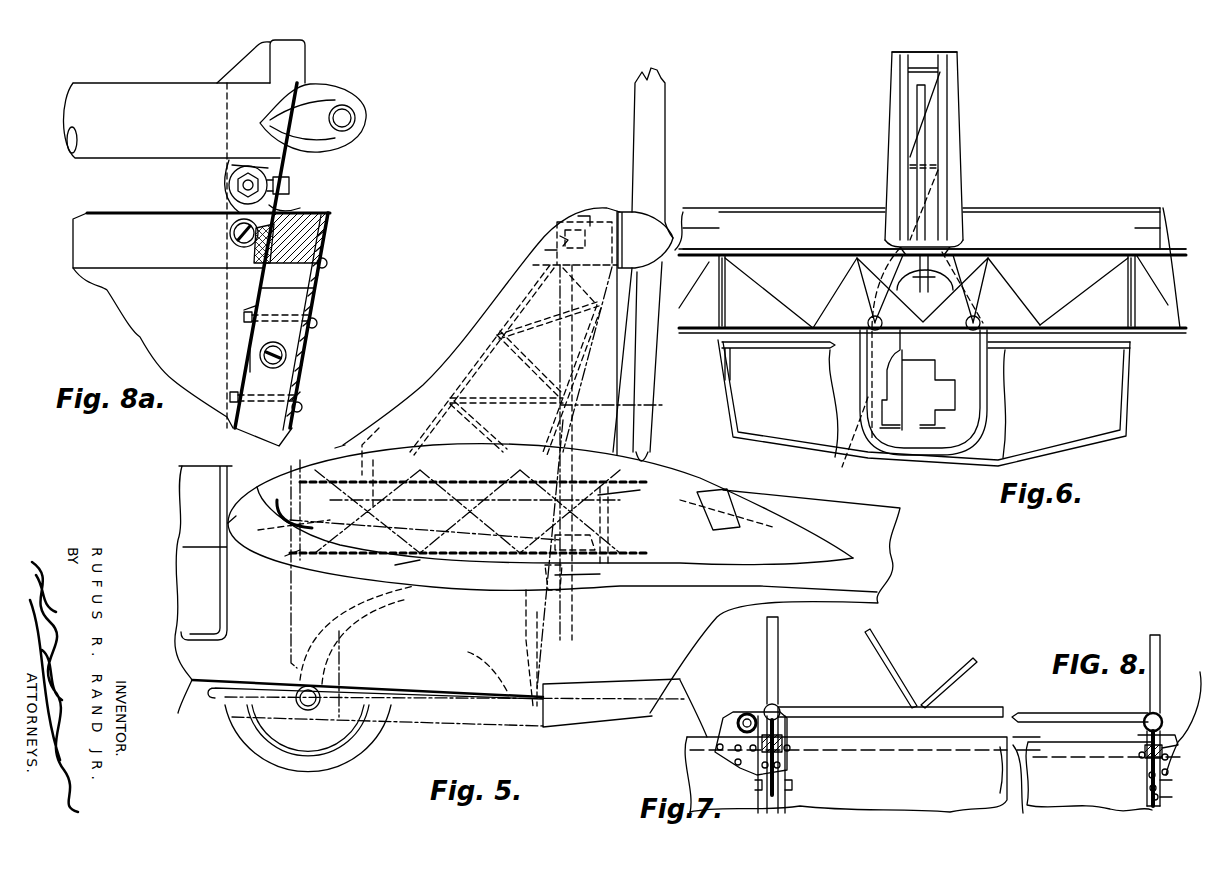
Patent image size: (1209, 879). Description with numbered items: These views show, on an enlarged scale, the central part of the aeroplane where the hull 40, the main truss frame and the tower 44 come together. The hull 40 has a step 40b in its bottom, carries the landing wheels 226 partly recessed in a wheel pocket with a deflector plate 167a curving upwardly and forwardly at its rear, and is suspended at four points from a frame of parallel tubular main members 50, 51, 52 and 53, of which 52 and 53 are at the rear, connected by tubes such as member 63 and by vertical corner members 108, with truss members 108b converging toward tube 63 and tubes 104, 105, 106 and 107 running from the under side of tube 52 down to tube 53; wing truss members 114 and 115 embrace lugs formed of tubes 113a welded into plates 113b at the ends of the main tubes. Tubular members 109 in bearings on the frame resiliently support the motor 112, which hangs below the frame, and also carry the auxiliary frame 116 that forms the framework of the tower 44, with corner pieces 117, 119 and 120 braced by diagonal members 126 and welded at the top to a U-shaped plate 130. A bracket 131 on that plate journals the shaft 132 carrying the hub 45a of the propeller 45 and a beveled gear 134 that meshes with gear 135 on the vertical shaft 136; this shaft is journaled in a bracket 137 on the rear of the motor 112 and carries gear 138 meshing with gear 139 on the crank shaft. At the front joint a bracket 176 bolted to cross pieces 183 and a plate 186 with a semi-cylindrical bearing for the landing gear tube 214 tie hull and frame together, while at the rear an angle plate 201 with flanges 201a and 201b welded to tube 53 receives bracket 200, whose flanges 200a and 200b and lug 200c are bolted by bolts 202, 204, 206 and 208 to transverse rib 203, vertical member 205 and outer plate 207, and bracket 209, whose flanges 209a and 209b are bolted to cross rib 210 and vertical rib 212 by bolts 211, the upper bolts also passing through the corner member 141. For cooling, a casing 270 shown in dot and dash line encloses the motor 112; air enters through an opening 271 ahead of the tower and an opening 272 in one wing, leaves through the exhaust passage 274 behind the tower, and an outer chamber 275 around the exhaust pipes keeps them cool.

In FIG. 6, the hull 40 is at (1095, 396).
In FIG. 5, the step 40b is at (549, 726).
In FIG. 5, the tower 44 is at (507, 287).
In FIG. 6, the tower 44 is at (963, 178).
In FIG. 5, the propeller 45 is at (657, 137).
In FIG. 5, the hub 45a is at (635, 212).
In FIG. 5, the main member 50 is at (327, 438).
In FIG. 5, the main member 51 is at (285, 556).
In FIG. 7, the main member 51 is at (782, 706).
In FIG. 5, the main member 52 is at (598, 495).
In FIG. 6, the main member 52 is at (783, 232).
In FIG. 8A, the main member 53 is at (97, 159).
In FIG. 5, the main member 53 is at (600, 575).
In FIG. 6, the main member 53 is at (760, 336).
In FIG. 8, the main member 53 is at (1147, 716).
In FIG. 8A, the connecting member 63 is at (352, 94).
In FIG. 8, the connecting member 63 is at (1125, 711).
In FIG. 6, the tube 104 is at (1100, 283).
In FIG. 6, the tube 105 is at (1016, 282).
In FIG. 6, the tube 106 is at (775, 284).
In FIG. 6, the tube 107 is at (842, 276).
In FIG. 8A, the vertical member 108 is at (309, 53).
In FIG. 6, the vertical member 108 is at (727, 296).
In FIG. 7, the vertical member 108 is at (780, 679).
In FIG. 8, the vertical member 108 is at (1150, 645).
In FIG. 7, the truss member 108b is at (957, 664).
In FIG. 5, the tubular member 109 is at (405, 570).
In FIG. 6, the tubular member 109 is at (872, 326).
In FIG. 5, the motor 112 is at (527, 620).
In FIG. 6, the motor 112 is at (920, 427).
In FIG. 8A, the tube 113a is at (354, 115).
In FIG. 8A, the plate 113b is at (330, 150).
In FIG. 6, the tubular truss member 114 is at (722, 226).
In FIG. 6, the tubular truss member 115 is at (700, 340).
In FIG. 5, the auxiliary frame 116 is at (490, 339).
In FIG. 5, the corner piece 117 is at (478, 372).
In FIG. 5, the corner piece 119 is at (557, 412).
In FIG. 6, the corner piece 119 is at (907, 120).
In FIG. 6, the corner piece 120 is at (948, 121).
In FIG. 5, the diagonal member 126 is at (556, 340).
In FIG. 5, the U-shaped plate 130 is at (557, 262).
In FIG. 5, the bracket 131 is at (560, 226).
In FIG. 5, the shaft 132 is at (557, 240).
In FIG. 5, the beveled gear 134 is at (580, 218).
In FIG. 5, the beveled gear 135 is at (543, 247).
In FIG. 6, the vertical shaft 136 is at (925, 157).
In FIG. 5, the bracket 137 is at (604, 590).
In FIG. 6, the bracket 137 is at (916, 346).
In FIG. 5, the beveled gear 138 is at (592, 548).
In FIG. 5, the beveled gear 139 is at (562, 590).
In FIG. 8A, the longitudinal member 141 is at (329, 221).
In FIG. 5, the deflector plate 167a is at (468, 652).
In FIG. 7, the bracket 176 is at (782, 760).
In FIG. 7, the cross piece 183 is at (786, 738).
In FIG. 7, the plate 186 is at (727, 736).
In FIG. 8A, the bracket 200 is at (229, 292).
In FIG. 8A, the flange 200a is at (318, 288).
In FIG. 8A, the flange 200b is at (240, 320).
In FIG. 8A, the lug 200c is at (262, 361).
In FIG. 8A, the angle plate 201 is at (285, 162).
In FIG. 8, the angle plate 201 is at (1138, 733).
In FIG. 8A, the flange 201a is at (300, 208).
In FIG. 8A, the flange 201b is at (230, 168).
In FIG. 8A, the bolt 202 is at (230, 191).
In FIG. 8, the bolt 202 is at (1162, 720).
In FIG. 8A, the rib 203 is at (80, 270).
In FIG. 8, the rib 203 is at (1140, 761).
In FIG. 8A, the bolt 204 is at (230, 235).
In FIG. 8A, the vertical member 205 is at (288, 360).
In FIG. 8A, the bolt 206 is at (332, 263).
In FIG. 8A, the plate 207 is at (312, 352).
In FIG. 8A, the bolt 208 is at (300, 391).
In FIG. 8, the bracket 209 is at (1170, 765).
In FIG. 8, the flange 209a is at (1174, 783).
In FIG. 8, the flange 209b is at (1179, 771).
In FIG. 8, the cross rib 210 is at (1185, 708).
In FIG. 8, the bolt 211 is at (1172, 795).
In FIG. 8, the vertical rib 212 is at (1158, 806).
In FIG. 7, the tube 214 is at (745, 714).
In FIG. 5, the landing wheel 226 is at (345, 733).
In FIG. 5, the casing 270 is at (565, 662).
In FIG. 5, the opening 271 is at (385, 441).
In FIG. 5, the opening 272 is at (228, 522).
In FIG. 5, the exhaust passage 274 is at (632, 406).
In FIG. 6, the outer chamber 275 is at (862, 452).